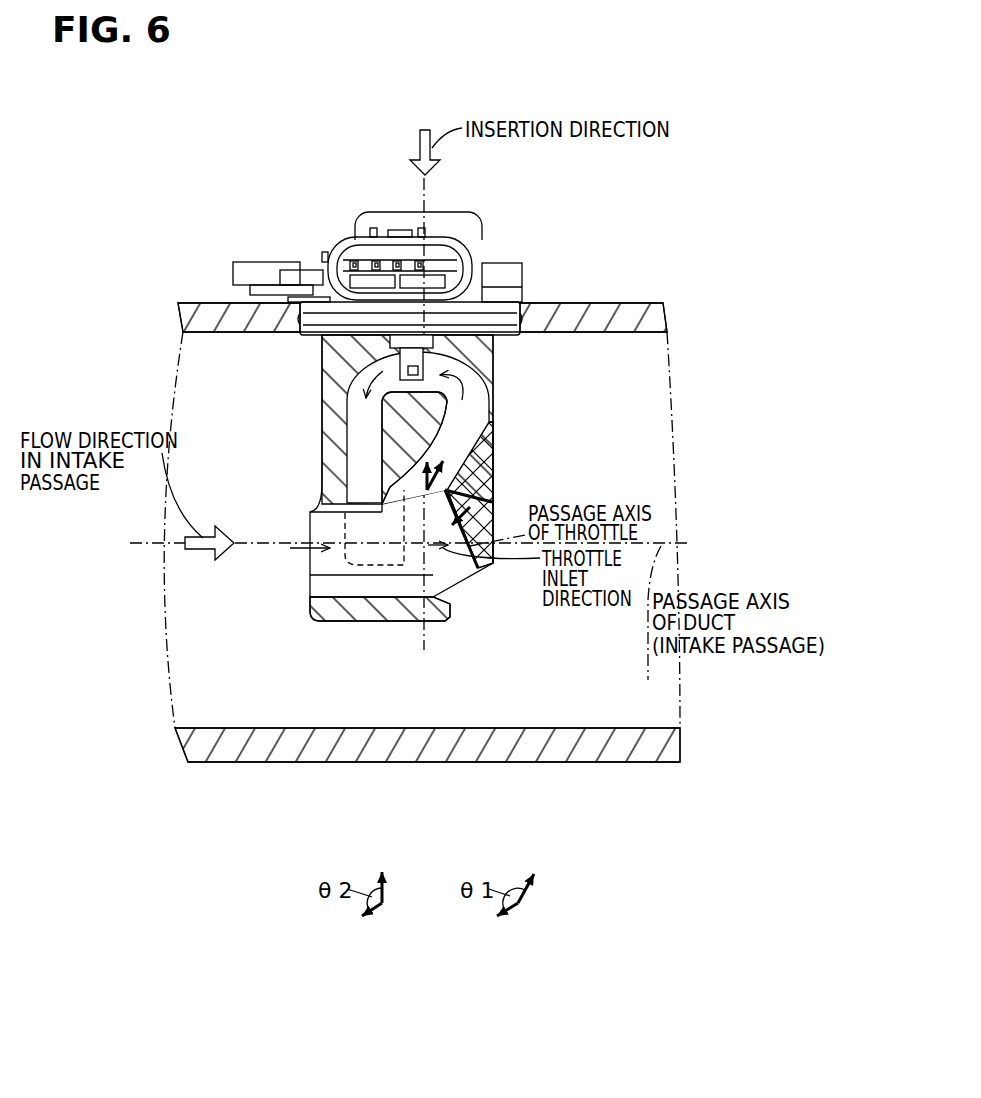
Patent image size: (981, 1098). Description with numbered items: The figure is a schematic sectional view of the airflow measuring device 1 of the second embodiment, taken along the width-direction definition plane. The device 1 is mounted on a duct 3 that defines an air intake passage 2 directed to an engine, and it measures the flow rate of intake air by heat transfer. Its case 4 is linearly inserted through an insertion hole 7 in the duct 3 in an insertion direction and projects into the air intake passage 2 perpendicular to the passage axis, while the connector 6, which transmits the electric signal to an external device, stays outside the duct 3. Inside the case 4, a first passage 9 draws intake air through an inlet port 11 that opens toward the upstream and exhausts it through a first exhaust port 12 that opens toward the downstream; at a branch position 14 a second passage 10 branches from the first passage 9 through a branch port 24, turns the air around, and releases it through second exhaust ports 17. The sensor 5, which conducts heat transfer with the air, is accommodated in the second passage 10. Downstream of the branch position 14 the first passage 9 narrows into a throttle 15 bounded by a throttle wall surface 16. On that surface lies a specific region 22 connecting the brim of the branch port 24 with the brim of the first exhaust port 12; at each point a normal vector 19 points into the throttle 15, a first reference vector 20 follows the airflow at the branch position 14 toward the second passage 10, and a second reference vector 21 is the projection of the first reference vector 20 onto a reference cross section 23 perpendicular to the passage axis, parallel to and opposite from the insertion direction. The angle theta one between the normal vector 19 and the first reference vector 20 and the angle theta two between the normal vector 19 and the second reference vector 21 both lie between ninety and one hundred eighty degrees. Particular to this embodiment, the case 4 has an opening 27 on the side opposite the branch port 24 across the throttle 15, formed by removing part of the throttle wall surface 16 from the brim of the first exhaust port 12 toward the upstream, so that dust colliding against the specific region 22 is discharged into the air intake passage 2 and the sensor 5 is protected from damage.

The airflow measuring device 1 is at (222, 172).
The air intake passage 2 is at (202, 370).
The duct 3 is at (245, 761).
The case 4 is at (332, 403).
The sensor 5 is at (398, 353).
The connector 6 is at (365, 262).
The insertion hole 7 is at (496, 305).
The first passage 9 is at (352, 604).
The second passage 10 is at (355, 386).
The inlet port 11 is at (310, 566).
The first exhaust port 12 is at (496, 561).
The branch position 14 is at (490, 489).
The throttle 15 is at (448, 564).
The throttle wall surface 16 is at (483, 491).
The second exhaust ports 17 is at (404, 567).
The normal vector 19 is at (473, 517).
The first reference vector 20 is at (450, 455).
The second reference vector 21 is at (422, 484).
The specific region 22 is at (497, 505).
The reference cross section 23 is at (447, 622).
The branch port 24 is at (405, 501).
The opening 27 is at (467, 577).